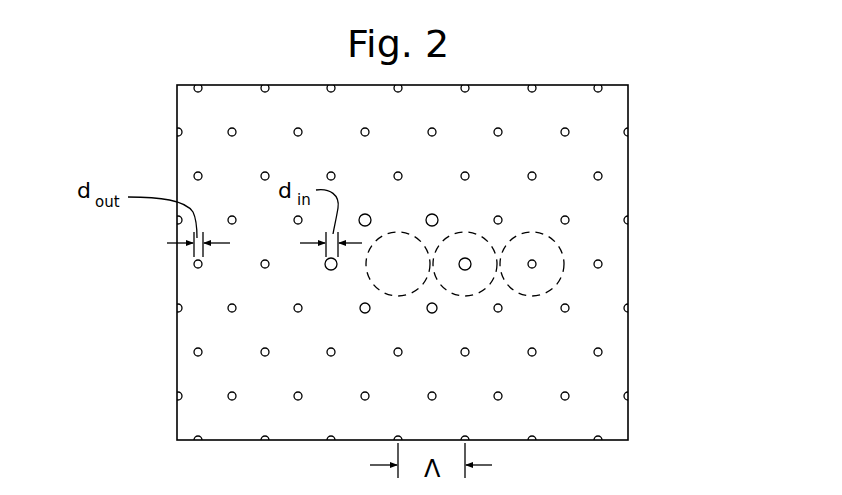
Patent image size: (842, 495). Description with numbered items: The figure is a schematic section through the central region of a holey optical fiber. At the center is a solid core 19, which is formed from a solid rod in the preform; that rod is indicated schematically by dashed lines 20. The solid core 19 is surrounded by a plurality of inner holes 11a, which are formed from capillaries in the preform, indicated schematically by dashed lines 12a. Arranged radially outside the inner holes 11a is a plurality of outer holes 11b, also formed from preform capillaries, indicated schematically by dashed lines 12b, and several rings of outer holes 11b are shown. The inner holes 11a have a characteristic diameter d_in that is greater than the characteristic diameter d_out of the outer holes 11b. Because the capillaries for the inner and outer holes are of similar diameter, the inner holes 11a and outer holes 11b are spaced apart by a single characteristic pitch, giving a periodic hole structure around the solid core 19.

The solid core 19 is at (372, 277).
The inner holes 11a is at (365, 314).
The outer holes 11b is at (228, 133).
The dashed lines 20 is at (400, 230).
The dashed lines 12a is at (493, 240).
The dashed lines 12b is at (564, 264).